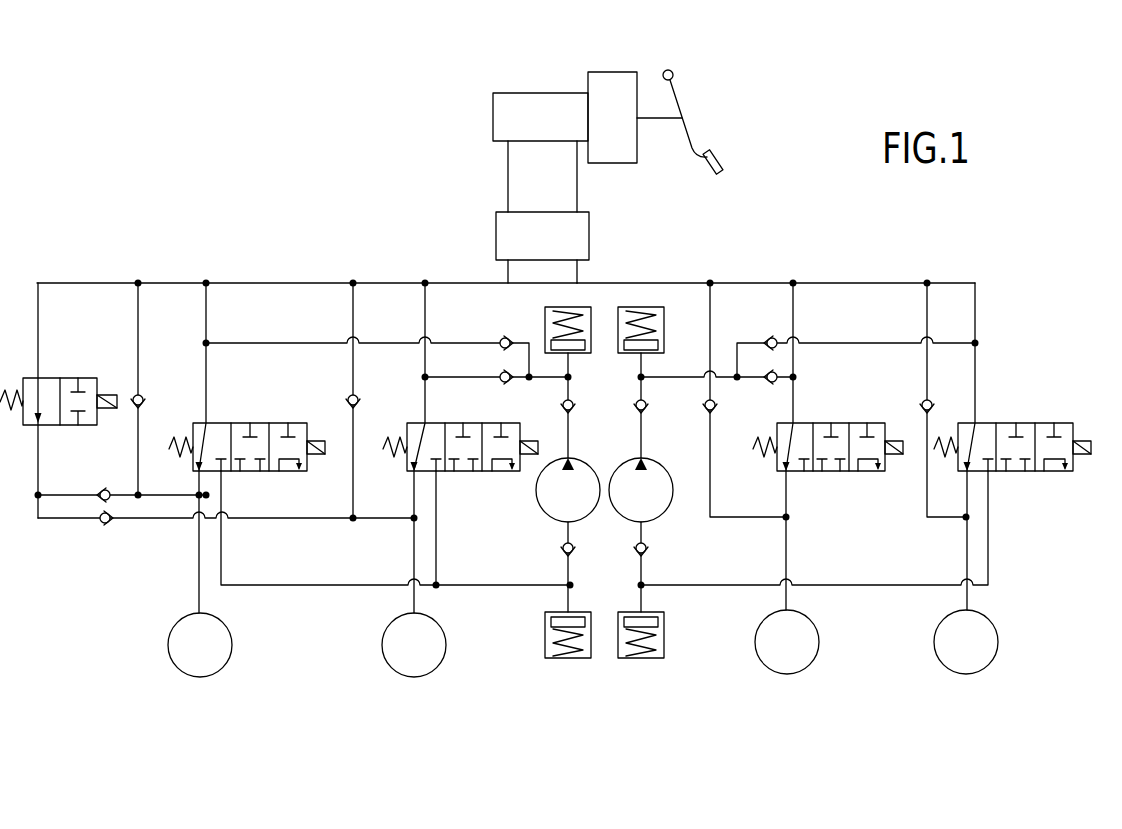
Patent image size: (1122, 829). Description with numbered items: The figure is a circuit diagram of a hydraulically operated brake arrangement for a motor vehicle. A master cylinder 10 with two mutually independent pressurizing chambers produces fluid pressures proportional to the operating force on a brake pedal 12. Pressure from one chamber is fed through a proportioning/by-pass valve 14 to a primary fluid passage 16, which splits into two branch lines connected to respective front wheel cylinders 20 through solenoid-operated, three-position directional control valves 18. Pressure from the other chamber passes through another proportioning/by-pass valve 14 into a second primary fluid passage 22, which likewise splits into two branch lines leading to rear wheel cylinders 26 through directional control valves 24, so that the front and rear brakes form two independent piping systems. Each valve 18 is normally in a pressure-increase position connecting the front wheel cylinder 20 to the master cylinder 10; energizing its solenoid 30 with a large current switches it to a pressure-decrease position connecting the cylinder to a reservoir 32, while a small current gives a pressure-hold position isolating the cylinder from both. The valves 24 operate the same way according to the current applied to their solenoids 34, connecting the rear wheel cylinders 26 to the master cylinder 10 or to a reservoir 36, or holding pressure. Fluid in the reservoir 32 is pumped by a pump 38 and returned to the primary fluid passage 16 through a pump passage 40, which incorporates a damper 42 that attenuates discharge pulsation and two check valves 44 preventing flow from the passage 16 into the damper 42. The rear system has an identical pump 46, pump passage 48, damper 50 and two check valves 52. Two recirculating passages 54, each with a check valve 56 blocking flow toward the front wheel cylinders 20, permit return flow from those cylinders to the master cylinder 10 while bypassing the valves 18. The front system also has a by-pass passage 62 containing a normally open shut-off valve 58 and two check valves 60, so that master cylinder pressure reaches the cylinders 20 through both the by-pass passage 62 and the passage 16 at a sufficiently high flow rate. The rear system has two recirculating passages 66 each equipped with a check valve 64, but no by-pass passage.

The master cylinder 10 is at (535, 96).
The brake pedal 12 is at (688, 142).
The proportioning/by-pass valve 14 is at (590, 236).
The primary fluid passage 16 is at (291, 283).
The solenoid-operated three-position directional control valve 18 is at (250, 423).
The front wheel cylinder 20 is at (233, 650).
The primary fluid passage 22 is at (685, 283).
The solenoid-operated three-position directional control valve 24 is at (829, 423).
The rear wheel cylinder 26 is at (819, 642).
The solenoid 30 is at (322, 456).
The reservoir 32 is at (545, 645).
The solenoid 34 is at (891, 441).
The reservoir 36 is at (664, 640).
The pump 38 is at (548, 510).
The pump passage 40 is at (576, 433).
The damper 42 is at (545, 313).
The check valve 44 is at (498, 338).
The pump 46 is at (661, 512).
The pump passage 48 is at (670, 378).
The damper 50 is at (664, 326).
The check valve 52 is at (768, 336).
The recirculating passage 54 is at (139, 315).
The check valve 56 is at (142, 395).
The normally open shut-off valve 58 is at (82, 378).
The check valve 60 is at (107, 488).
The by-pass passage 62 is at (40, 315).
The check valve 64 is at (706, 412).
The recirculating passage 66 is at (927, 317).